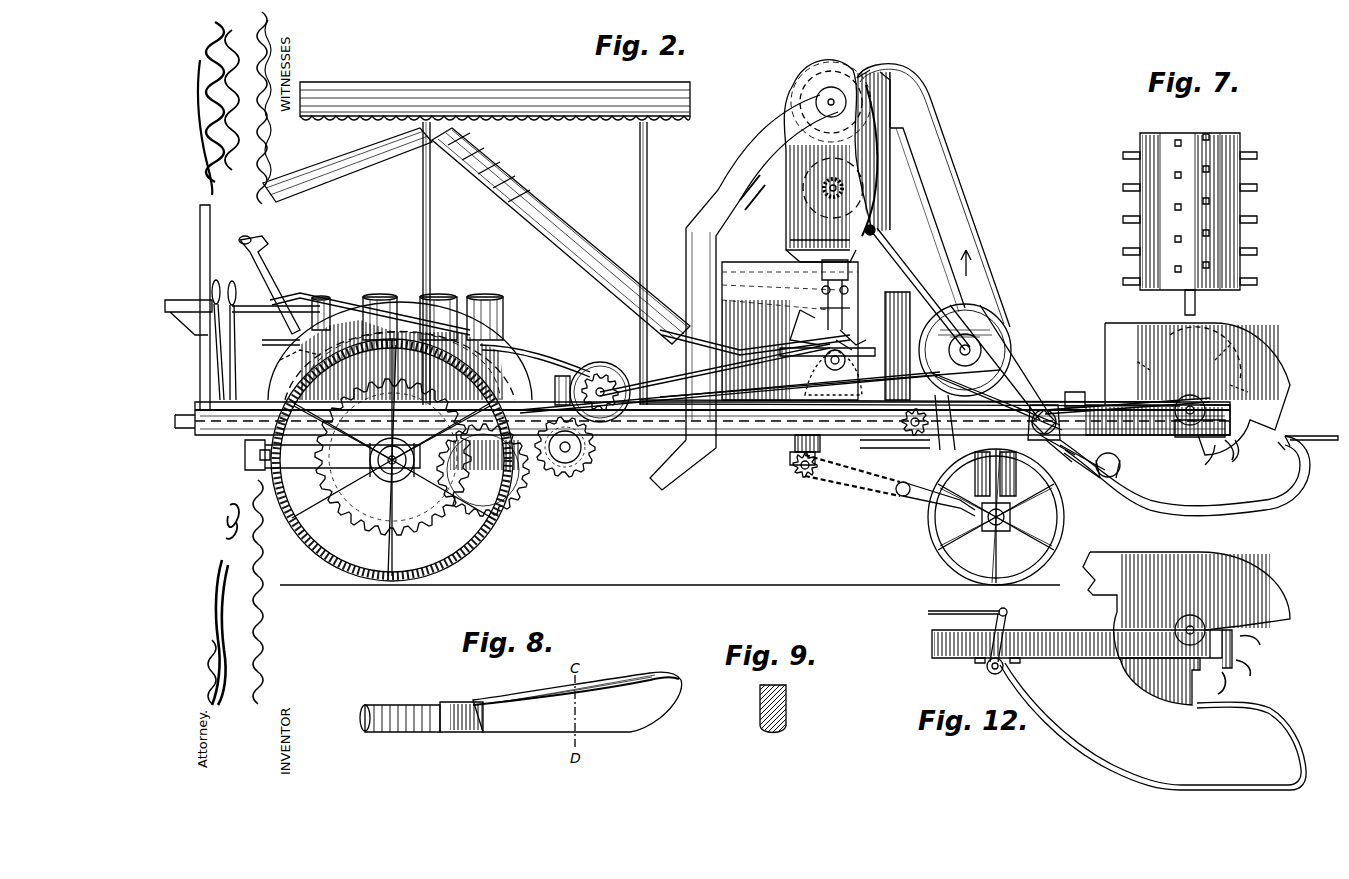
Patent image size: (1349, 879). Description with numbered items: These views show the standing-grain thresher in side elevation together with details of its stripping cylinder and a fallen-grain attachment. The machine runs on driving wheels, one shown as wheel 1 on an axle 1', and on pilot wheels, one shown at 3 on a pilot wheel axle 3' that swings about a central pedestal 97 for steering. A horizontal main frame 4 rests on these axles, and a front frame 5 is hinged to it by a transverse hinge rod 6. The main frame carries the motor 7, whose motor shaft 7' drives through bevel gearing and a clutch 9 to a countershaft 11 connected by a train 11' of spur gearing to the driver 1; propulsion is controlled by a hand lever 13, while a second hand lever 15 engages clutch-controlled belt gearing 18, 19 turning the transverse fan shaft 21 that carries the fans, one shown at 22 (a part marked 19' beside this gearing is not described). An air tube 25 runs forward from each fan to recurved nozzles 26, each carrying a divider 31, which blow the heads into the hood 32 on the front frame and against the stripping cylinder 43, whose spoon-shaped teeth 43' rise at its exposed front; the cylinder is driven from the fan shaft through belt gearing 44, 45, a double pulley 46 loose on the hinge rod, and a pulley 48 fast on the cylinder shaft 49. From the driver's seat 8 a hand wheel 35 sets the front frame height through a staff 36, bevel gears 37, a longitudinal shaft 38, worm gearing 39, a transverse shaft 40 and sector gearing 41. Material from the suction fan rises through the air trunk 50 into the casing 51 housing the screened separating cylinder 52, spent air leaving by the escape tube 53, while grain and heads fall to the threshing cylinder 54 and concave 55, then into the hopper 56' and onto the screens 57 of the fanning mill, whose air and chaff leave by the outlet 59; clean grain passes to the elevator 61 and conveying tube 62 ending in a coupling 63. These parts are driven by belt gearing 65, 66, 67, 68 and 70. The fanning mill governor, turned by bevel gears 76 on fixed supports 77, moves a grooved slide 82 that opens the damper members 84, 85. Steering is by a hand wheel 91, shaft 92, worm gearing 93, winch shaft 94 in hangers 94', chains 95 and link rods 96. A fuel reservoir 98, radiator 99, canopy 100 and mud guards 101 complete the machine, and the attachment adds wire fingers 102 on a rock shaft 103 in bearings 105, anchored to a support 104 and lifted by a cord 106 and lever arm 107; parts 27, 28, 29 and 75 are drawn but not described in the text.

In FIG. 2, the driving wheel 1 is at (385, 460).
In FIG. 2, the driver axle 1' is at (394, 470).
In FIG. 2, the pilot wheel 3 is at (981, 517).
In FIG. 2, the pilot wheel axle 3' is at (954, 528).
In FIG. 2, the main frame 4 is at (748, 438).
In FIG. 2, the front frame 5 is at (1108, 400).
In FIG. 12, the front frame 5 is at (1108, 652).
In FIG. 2, the transverse hinge rod 6 is at (1050, 400).
In FIG. 2, the motor 7 is at (407, 300).
In FIG. 2, the motor shaft 7' is at (564, 372).
In FIG. 2, the driver's seat 8 is at (178, 298).
In FIG. 2, the clutch 9 is at (600, 372).
In FIG. 2, the countershaft 11 is at (582, 450).
In FIG. 2, the train of spur gearing 11' is at (494, 472).
In FIG. 2, the hand lever 13 is at (217, 280).
In FIG. 2, the hand lever 15 is at (232, 280).
In FIG. 2, the belt gearing 18 is at (604, 370).
In FIG. 2, the belt gearing 19 is at (890, 375).
In FIG. 2, the rod 19' is at (730, 392).
In FIG. 2, the fan shaft 21 is at (1040, 380).
In FIG. 2, the fan 22 is at (1000, 325).
In FIG. 2, the air tube 25 is at (1170, 500).
In FIG. 2, the nozzle 26 is at (1280, 458).
In FIG. 2, the bracket 27 is at (1072, 396).
In FIG. 2, the coupling 28 is at (1110, 482).
In FIG. 2, the rod 29 is at (1078, 470).
In FIG. 2, the divider 31 is at (1311, 436).
In FIG. 2, the hood 32 is at (1262, 360).
In FIG. 12, the hood 32 is at (1262, 575).
In FIG. 2, the hand wheel 35 is at (284, 332).
In FIG. 2, the vertical staff 36 is at (400, 351).
In FIG. 2, the bevel gears 37 is at (300, 352).
In FIG. 2, the longitudinal shaft 38 is at (408, 456).
In FIG. 2, the worm gearing 39 is at (918, 410).
In FIG. 2, the transverse shaft 40 is at (905, 445).
In FIG. 2, the sector gearing 41 is at (923, 432).
In FIG. 2, the stripping cylinder 43 is at (1254, 435).
In FIG. 7, the stripping cylinder 43 is at (1260, 250).
In FIG. 12, the stripping cylinder 43 is at (1243, 677).
In FIG. 2, the spoon-shaped tooth 43' is at (1254, 444).
In FIG. 7, the spoon-shaped tooth 43' is at (1186, 218).
In FIG. 8, the spoon-shaped tooth 43' is at (521, 712).
In FIG. 9, the spoon-shaped tooth 43' is at (774, 720).
In FIG. 12, the spoon-shaped tooth 43' is at (1265, 647).
In FIG. 2, the belt gearing 44 is at (979, 349).
In FIG. 2, the belt gearing 45 is at (1070, 401).
In FIG. 2, the double pulley 46 is at (1057, 453).
In FIG. 2, the pulley 48 is at (1192, 398).
In FIG. 2, the cylinder shaft 49 is at (1205, 408).
In FIG. 7, the cylinder shaft 49 is at (1195, 308).
In FIG. 2, the air trunk 50 is at (970, 215).
In FIG. 2, the casing 51 is at (871, 66).
In FIG. 2, the separating cylinder 52 is at (886, 74).
In FIG. 2, the escape tube 53 is at (770, 128).
In FIG. 2, the threshing cylinder 54 is at (882, 190).
In FIG. 2, the concave 55 is at (880, 228).
In FIG. 2, the hopper 56' is at (804, 250).
In FIG. 2, the screen 57 is at (790, 331).
In FIG. 2, the outlet 59 is at (720, 340).
In FIG. 2, the elevator 61 is at (561, 236).
In FIG. 2, the conveying tube 62 is at (345, 172).
In FIG. 2, the coupling 63 is at (195, 415).
In FIG. 2, the belt gearing 65 is at (905, 268).
In FIG. 2, the belt gearing 66 is at (810, 198).
In FIG. 2, the belt gearing 67 is at (810, 125).
In FIG. 2, the belt gearing 68 is at (815, 85).
In FIG. 2, the belt gearing 70 is at (832, 355).
In FIG. 2, the rod 75 is at (850, 303).
In FIG. 2, the bevel gears 76 is at (833, 372).
In FIG. 2, the fixed supports 77 is at (850, 270).
In FIG. 2, the grooved slide 82 is at (848, 304).
In FIG. 2, the damper member 84 is at (801, 327).
In FIG. 2, the damper member 85 is at (858, 338).
In FIG. 2, the hand wheel 91 is at (272, 248).
In FIG. 2, the shaft 92 is at (312, 287).
In FIG. 2, the worm gearing 93 is at (825, 448).
In FIG. 2, the winch shaft 94 is at (802, 479).
In FIG. 2, the hangers 94' is at (783, 464).
In FIG. 2, the chains 95 is at (852, 480).
In FIG. 2, the link rods 96 is at (905, 482).
In FIG. 2, the central pedestal 97 is at (990, 468).
In FIG. 2, the liquid fuel reservoir 98 is at (260, 452).
In FIG. 2, the radiator 99 is at (897, 346).
In FIG. 2, the canopy 100 is at (468, 82).
In FIG. 2, the mud guards 101 is at (505, 345).
In FIG. 12, the resilient wire fingers 102 is at (1220, 703).
In FIG. 12, the rock shaft 103 is at (988, 670).
In FIG. 12, the support 104 is at (1178, 700).
In FIG. 12, the bearings 105 is at (1020, 660).
In FIG. 12, the cord 106 is at (962, 605).
In FIG. 12, the lever arm 107 is at (1012, 616).